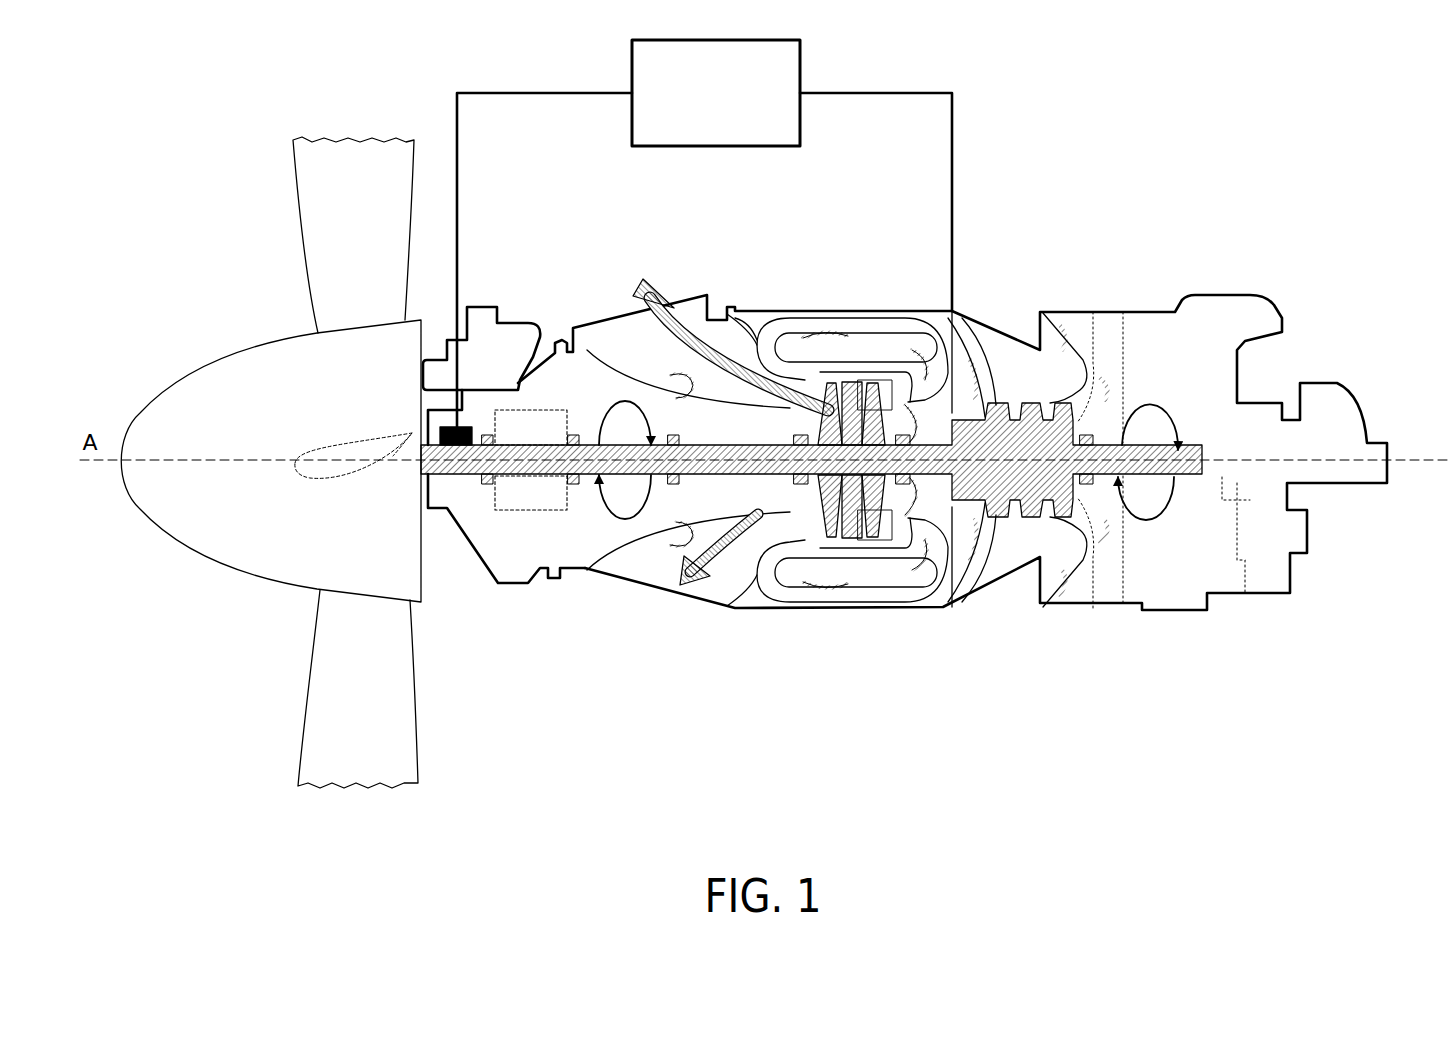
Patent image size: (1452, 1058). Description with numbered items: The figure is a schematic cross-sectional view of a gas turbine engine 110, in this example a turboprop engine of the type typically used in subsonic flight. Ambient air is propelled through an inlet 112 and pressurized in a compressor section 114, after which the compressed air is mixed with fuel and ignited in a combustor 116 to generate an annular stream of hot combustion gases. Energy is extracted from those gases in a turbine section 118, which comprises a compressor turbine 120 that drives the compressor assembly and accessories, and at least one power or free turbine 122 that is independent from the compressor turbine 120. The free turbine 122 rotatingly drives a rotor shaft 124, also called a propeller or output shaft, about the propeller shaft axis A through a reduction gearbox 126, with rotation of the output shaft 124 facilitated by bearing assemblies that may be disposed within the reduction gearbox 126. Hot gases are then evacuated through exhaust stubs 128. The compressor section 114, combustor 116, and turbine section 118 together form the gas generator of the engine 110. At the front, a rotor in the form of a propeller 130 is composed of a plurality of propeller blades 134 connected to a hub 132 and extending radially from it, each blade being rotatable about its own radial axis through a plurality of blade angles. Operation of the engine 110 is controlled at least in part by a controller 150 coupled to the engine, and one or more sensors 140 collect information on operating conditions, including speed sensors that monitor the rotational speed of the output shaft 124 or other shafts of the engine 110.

The gas turbine engine 110 is at (868, 415).
The inlet 112 is at (1108, 284).
The compressor section 114 is at (994, 348).
The combustor 116 is at (885, 347).
The turbine section 118 is at (855, 468).
The compressor turbine 120 is at (840, 460).
The power or free turbine 122 is at (840, 460).
The rotor shaft 124 is at (548, 500).
The reduction gearbox 126 is at (532, 462).
The exhaust stubs 128 is at (620, 287).
The propeller 130 is at (265, 455).
The spinner 132 is at (248, 377).
The propeller blades 134 is at (323, 210).
The sensors 140 is at (457, 462).
The controller 150 is at (741, 131).